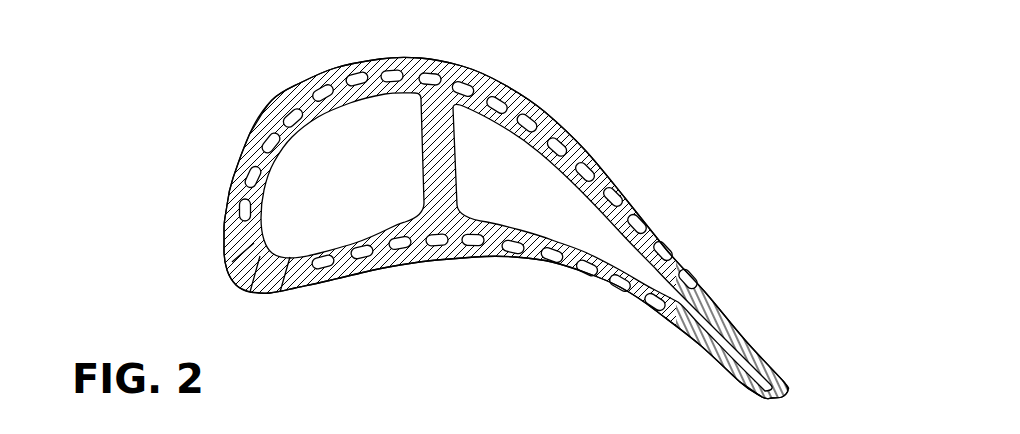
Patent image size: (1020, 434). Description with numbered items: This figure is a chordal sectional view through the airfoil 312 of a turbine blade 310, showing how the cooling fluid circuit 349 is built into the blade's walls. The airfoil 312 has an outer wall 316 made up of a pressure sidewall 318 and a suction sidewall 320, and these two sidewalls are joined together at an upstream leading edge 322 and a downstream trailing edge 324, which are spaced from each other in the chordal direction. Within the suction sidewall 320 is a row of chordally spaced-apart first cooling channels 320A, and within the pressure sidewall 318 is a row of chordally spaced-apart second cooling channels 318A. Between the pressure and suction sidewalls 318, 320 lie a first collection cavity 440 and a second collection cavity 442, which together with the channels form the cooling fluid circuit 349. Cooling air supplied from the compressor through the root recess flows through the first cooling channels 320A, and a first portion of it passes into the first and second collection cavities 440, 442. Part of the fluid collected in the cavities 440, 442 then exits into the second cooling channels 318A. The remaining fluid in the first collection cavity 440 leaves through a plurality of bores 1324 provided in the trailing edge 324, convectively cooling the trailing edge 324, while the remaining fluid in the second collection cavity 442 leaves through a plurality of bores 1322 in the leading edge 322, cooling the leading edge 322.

The turbine blade 310 is at (745, 172).
The airfoil 312 is at (727, 257).
The outer wall 316 is at (332, 276).
The pressure sidewall 318 is at (522, 276).
The second cooling channels 318A is at (552, 260).
The suction sidewall 320 is at (550, 128).
The first cooling channels 320A is at (250, 173).
The leading edge 322 is at (240, 288).
The trailing edge 324 is at (769, 400).
The cooling fluid circuit 349 is at (477, 130).
The first collection cavity 440 is at (528, 187).
The second collection cavity 442 is at (366, 177).
The bores 1322 is at (280, 292).
The bores 1324 is at (783, 389).